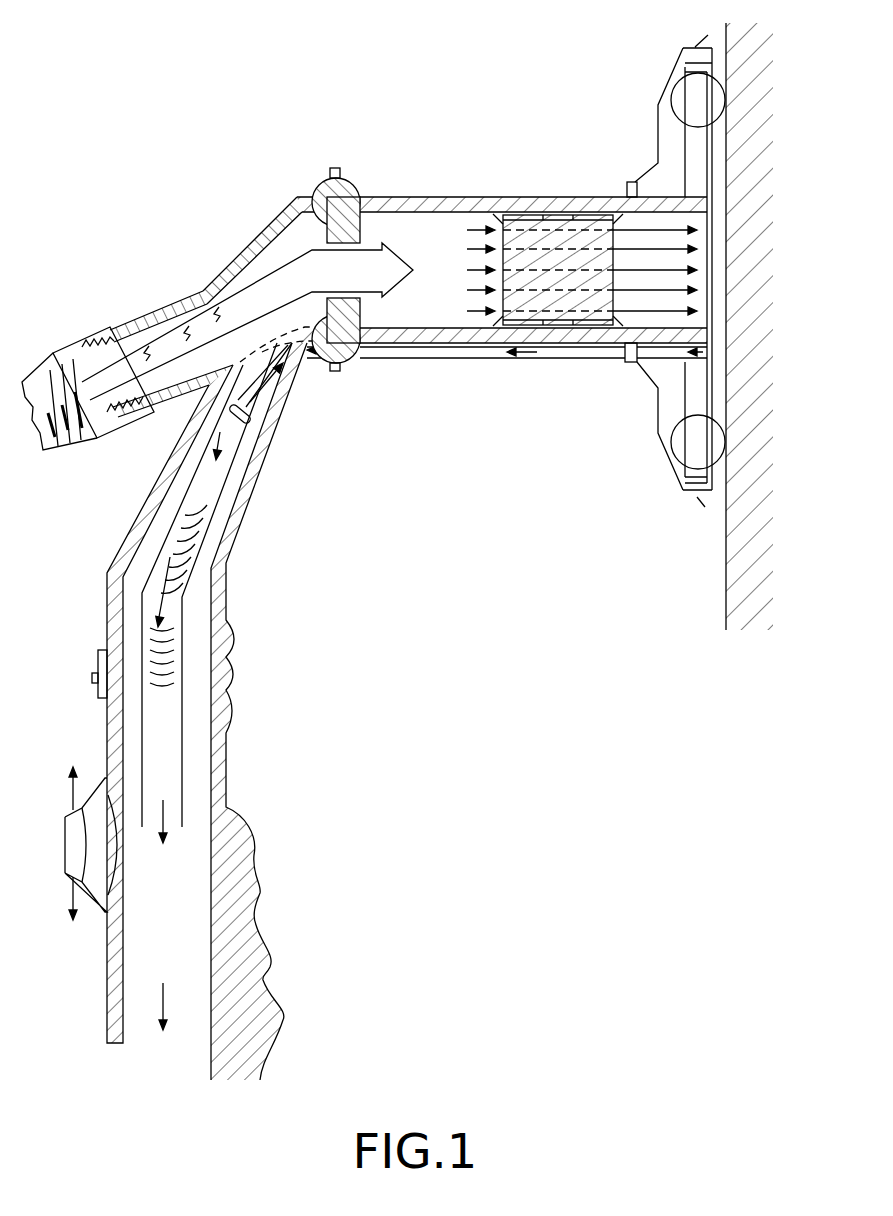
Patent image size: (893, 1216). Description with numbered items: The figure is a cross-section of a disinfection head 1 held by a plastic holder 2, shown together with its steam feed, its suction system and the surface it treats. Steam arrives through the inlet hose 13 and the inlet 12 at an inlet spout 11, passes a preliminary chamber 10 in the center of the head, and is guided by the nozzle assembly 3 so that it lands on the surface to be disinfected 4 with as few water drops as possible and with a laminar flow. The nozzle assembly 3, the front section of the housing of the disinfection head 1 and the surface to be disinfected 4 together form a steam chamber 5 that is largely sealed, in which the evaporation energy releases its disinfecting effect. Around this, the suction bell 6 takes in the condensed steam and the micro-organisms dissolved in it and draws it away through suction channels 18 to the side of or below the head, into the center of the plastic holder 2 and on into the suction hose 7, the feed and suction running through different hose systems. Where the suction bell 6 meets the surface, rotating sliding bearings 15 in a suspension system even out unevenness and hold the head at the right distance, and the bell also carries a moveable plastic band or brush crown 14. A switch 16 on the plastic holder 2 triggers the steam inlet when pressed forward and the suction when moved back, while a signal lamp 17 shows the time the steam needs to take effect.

The disinfection head 1 is at (477, 197).
The plastic holder 2 is at (228, 622).
The nozzle assembly 3 is at (560, 235).
The surface to be disinfected 4 is at (726, 535).
The steam chamber 5 is at (645, 248).
The suction bell 6 is at (657, 423).
The suction hose 7 is at (232, 435).
The preliminary chamber 10 is at (432, 230).
The inlet spout 11 is at (240, 248).
The inlet 12 is at (160, 308).
The inlet hose 13 is at (85, 336).
The plastic band or brush crown 14 is at (682, 50).
The sliding bearings 15 is at (697, 450).
The steam/suction function switch 16 is at (100, 780).
The signal lamp 17 is at (335, 168).
The suction nozzle/channel 18 is at (440, 355).